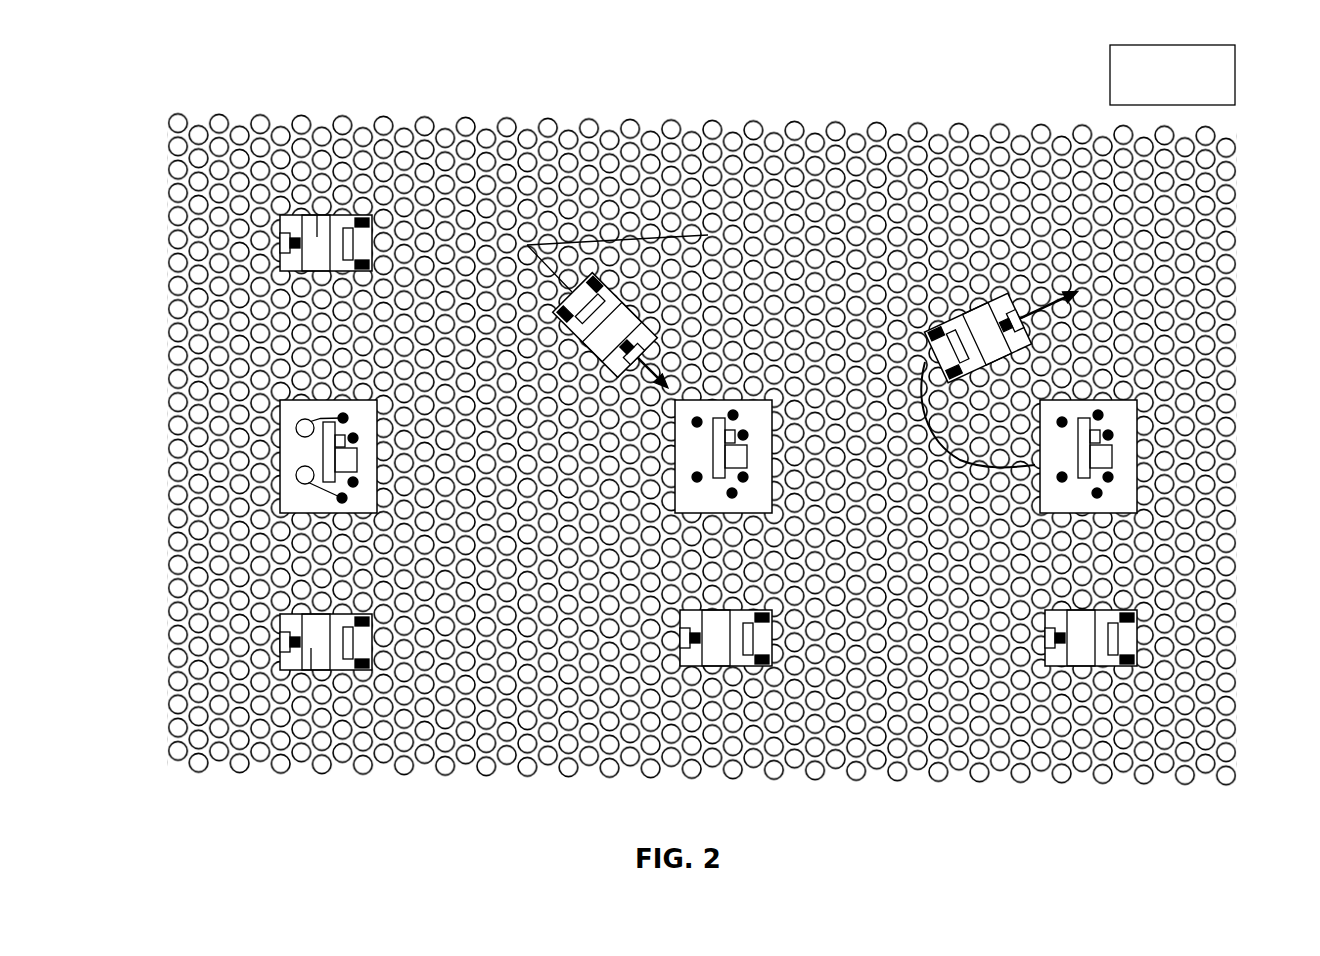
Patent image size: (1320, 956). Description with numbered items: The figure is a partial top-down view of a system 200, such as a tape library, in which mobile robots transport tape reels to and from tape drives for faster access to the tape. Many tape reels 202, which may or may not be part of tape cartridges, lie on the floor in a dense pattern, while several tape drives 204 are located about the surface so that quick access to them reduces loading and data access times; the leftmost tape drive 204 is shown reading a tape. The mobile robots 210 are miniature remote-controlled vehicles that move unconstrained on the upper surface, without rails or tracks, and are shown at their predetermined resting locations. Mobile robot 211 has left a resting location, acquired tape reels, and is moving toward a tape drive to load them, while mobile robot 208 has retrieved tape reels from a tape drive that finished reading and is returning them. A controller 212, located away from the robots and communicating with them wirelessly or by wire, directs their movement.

The system 200 is at (820, 92).
The tape reel 202 is at (1238, 176).
The tape drive 204 is at (315, 457).
The mobile robot 208 is at (963, 293).
The mobile robot 210 is at (318, 214).
The mobile robot 211 is at (605, 290).
The controller 212 is at (1172, 75).